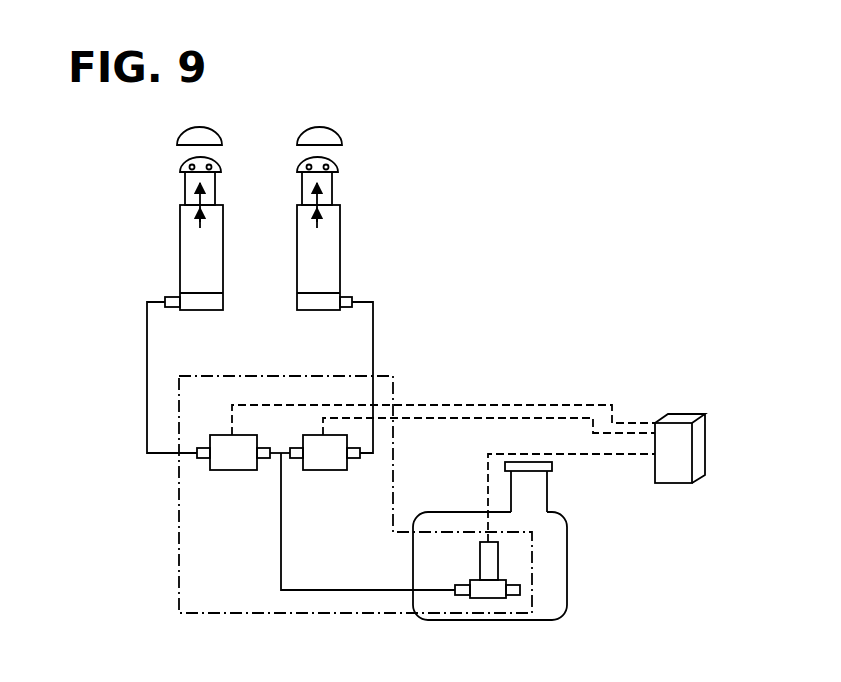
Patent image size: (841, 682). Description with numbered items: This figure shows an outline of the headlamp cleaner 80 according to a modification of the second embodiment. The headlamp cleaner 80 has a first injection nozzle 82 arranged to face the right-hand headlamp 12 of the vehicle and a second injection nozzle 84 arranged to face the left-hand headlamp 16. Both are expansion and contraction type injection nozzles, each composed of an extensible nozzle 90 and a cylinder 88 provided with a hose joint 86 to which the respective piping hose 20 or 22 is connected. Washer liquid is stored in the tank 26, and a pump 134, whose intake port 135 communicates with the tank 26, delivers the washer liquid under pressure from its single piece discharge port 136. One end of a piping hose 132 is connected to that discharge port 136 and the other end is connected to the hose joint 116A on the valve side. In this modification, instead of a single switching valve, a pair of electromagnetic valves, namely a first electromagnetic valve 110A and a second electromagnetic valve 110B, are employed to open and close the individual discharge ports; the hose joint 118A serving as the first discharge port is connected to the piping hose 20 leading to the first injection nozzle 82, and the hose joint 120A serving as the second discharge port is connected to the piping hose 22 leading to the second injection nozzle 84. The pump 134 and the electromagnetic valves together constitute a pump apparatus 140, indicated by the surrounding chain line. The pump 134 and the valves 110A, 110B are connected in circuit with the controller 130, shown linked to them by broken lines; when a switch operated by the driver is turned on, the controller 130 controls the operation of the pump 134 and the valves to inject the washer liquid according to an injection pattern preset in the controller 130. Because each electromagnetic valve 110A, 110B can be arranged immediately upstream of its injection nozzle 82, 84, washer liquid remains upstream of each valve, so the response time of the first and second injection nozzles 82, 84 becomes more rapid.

The right-hand headlamp 12 is at (325, 134).
The left-hand headlamp 16 is at (205, 134).
The piping hose 20 is at (373, 352).
The piping hose 22 is at (147, 337).
The tank 26 is at (557, 550).
The headlamp cleaner 80 is at (546, 294).
The first injection nozzle 82 is at (343, 248).
The second injection nozzle 84 is at (226, 260).
The hose joint 86 is at (172, 307).
The cylinder 88 is at (215, 230).
The extensible nozzle 90 is at (212, 191).
The first electromagnetic valve 110A is at (222, 435).
The second electromagnetic valve 110B is at (307, 443).
The hose joint 116A is at (265, 458).
The hose joint (first discharge port) 118A is at (352, 460).
The hose joint (second discharge port) 120A is at (203, 458).
The controller 130 is at (698, 438).
The piping hose 132 is at (368, 593).
The pump 134 is at (485, 602).
The intake port 135 is at (522, 590).
The discharge port 136 is at (463, 596).
The pump apparatus 140 is at (195, 615).